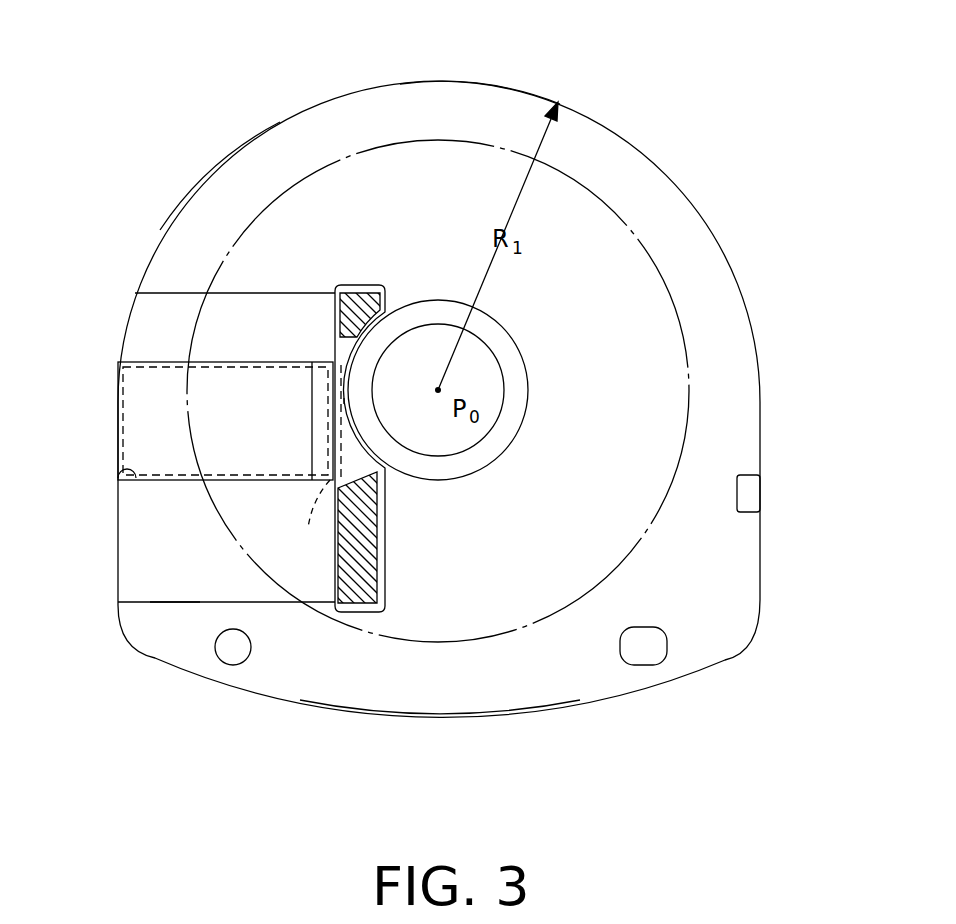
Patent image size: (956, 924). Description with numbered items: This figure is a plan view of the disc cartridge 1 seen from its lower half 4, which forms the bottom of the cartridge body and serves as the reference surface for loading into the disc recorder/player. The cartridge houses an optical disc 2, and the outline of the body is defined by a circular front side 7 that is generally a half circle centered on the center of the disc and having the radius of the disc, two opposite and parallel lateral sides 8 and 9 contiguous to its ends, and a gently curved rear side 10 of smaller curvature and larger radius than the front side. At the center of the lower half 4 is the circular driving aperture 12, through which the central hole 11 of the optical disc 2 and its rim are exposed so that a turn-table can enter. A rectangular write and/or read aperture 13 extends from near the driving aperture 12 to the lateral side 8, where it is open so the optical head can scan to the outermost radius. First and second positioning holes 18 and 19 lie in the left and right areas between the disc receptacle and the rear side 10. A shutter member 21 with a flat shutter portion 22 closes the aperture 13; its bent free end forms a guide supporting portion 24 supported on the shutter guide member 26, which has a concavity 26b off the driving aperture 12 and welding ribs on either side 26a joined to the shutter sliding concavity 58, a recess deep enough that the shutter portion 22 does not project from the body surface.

The disc cartridge 1 is at (760, 564).
The optical disc 2 is at (545, 182).
The lower half 4 is at (215, 176).
The circular front side 7 is at (478, 83).
The lateral side 8 is at (117, 566).
The lateral side 9 is at (760, 435).
The rear side 10 is at (440, 714).
The central hole 11 is at (504, 375).
The driving aperture 12 is at (513, 430).
The write and/or read aperture 13 is at (118, 476).
The first positioning hole 18 is at (226, 655).
The second positioning hole 19 is at (660, 650).
The shutter member 21 is at (128, 434).
The shutter portion 22 is at (122, 388).
The guide supporting portion 24 is at (308, 518).
The shutter guide member 26 is at (386, 563).
The side of the concavity 26a is at (360, 305).
The concavity 26b is at (348, 406).
The shutter sliding concavity 58 is at (176, 598).